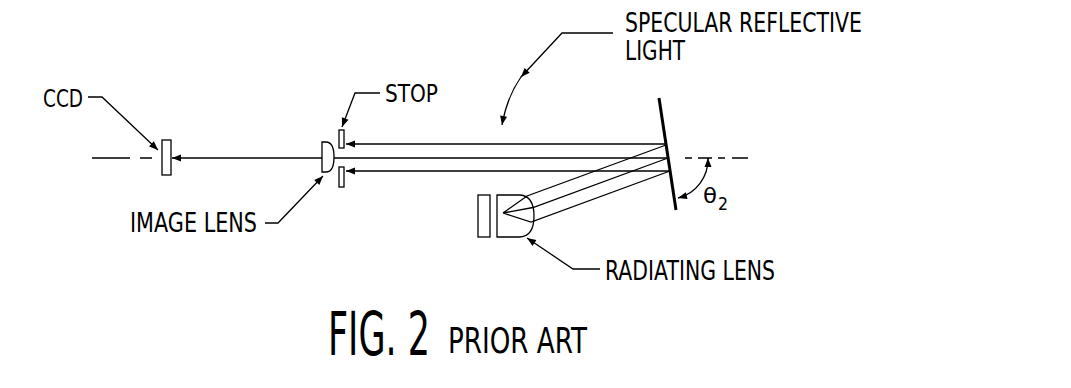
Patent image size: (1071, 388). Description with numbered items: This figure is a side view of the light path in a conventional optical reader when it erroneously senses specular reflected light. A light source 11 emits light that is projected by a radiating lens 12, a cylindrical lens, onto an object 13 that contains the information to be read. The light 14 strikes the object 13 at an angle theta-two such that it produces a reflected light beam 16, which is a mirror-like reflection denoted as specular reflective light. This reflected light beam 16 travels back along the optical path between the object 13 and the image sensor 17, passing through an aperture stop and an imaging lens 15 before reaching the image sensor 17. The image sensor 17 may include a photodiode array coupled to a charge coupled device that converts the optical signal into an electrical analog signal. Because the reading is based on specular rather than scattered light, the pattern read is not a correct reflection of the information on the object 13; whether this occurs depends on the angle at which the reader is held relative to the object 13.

The light source 11 is at (477, 213).
The radiating lens 12 is at (522, 238).
The object 13 is at (659, 100).
The light 14 is at (557, 183).
The imaging lens 15 is at (328, 175).
The reflected light beam 16 is at (528, 170).
The image sensor 17 is at (170, 140).